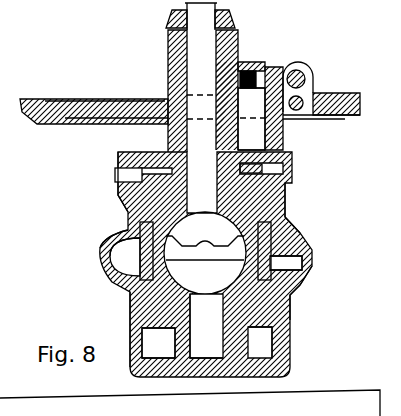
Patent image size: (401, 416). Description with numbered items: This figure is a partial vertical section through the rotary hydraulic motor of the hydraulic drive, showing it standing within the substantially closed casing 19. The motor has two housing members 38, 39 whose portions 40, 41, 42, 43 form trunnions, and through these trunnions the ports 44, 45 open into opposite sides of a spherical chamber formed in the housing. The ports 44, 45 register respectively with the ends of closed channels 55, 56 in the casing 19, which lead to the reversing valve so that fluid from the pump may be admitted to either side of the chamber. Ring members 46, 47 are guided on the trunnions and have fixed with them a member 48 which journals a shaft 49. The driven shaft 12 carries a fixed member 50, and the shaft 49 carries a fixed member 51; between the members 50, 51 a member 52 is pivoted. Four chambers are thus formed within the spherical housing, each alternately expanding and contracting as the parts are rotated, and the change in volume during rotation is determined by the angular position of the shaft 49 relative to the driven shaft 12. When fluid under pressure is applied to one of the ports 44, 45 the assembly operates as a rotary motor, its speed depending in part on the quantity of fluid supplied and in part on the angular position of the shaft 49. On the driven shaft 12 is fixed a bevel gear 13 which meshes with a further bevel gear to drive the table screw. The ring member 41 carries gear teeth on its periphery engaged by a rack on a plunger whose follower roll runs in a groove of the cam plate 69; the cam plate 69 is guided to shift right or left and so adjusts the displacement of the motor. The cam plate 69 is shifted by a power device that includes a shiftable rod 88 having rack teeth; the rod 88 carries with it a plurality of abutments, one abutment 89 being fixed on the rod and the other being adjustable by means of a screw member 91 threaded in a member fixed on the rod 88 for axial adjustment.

The driven shaft 12 is at (222, 195).
The bevel gear 13 is at (233, 14).
The casing 19 is at (292, 340).
The housing member 38 is at (285, 196).
The housing member 39 is at (296, 282).
The trunnion portion 40 is at (128, 211).
The trunnion portion 41 is at (128, 298).
The trunnion portion 42 is at (290, 298).
The trunnion portion 43 is at (286, 217).
The port 44 is at (143, 270).
The port 45 is at (313, 258).
The ring member 46 is at (142, 181).
The ring member 47 is at (285, 172).
The member 48 is at (168, 338).
The shaft 49 is at (192, 338).
The member 50 is at (232, 222).
The member 51 is at (253, 330).
The member 52 is at (143, 260).
The closed channel 55 is at (106, 247).
The closed channel 56 is at (290, 248).
The cam plate 69 is at (284, 147).
The shiftable rod 88 is at (306, 64).
The abutment 89 is at (306, 68).
The screw member 91 is at (318, 118).